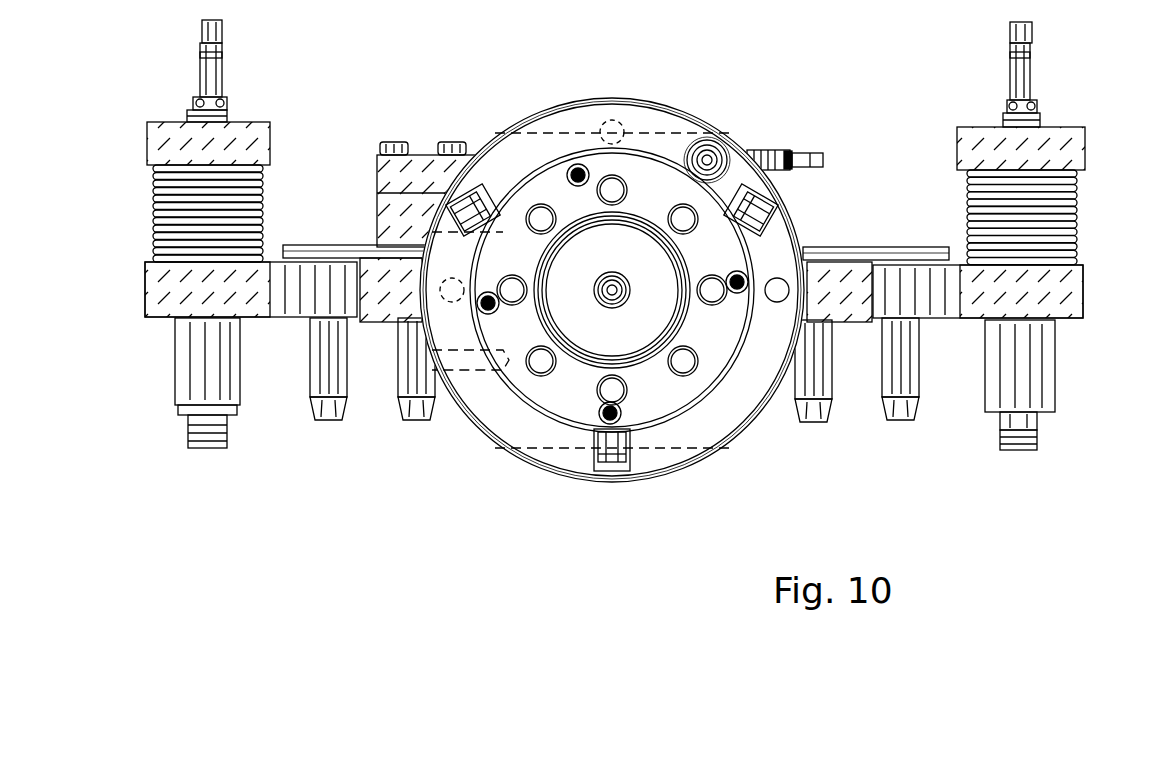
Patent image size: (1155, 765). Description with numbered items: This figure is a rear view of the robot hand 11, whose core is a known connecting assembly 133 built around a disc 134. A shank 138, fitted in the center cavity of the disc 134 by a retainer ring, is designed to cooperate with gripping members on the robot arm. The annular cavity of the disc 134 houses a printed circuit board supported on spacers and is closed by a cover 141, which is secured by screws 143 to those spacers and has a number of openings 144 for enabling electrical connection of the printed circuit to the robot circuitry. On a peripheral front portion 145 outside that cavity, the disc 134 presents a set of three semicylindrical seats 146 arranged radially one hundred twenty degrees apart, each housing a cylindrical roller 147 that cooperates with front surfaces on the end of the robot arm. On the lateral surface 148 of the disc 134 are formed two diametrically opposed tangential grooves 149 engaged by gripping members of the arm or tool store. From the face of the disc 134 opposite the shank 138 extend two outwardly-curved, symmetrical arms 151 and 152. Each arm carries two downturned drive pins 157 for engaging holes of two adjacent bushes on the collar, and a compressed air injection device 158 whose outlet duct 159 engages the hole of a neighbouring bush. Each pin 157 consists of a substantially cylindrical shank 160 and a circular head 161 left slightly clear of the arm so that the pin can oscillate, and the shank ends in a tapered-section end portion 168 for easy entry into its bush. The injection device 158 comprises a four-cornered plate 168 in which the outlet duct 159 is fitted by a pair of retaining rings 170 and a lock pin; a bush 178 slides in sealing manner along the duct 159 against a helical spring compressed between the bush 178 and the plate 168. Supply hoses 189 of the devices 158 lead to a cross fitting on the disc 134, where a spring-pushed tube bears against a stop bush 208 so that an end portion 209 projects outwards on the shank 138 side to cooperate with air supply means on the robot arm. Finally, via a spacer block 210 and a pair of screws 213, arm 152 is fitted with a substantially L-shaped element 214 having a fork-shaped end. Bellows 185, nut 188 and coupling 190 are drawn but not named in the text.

The hand 11 is at (330, 492).
The connecting assembly 133 is at (470, 438).
The disc 134 is at (732, 438).
The shank 138 is at (612, 296).
The cover 141 is at (545, 345).
The screws 143 is at (578, 170).
The openings 144 is at (684, 226).
The peripheral front portion 145 is at (675, 442).
The semicylindrical seats 146 is at (457, 205).
The cylindrical rollers 147 is at (483, 220).
The lateral surface 148 is at (706, 116).
The tangential grooves 149 is at (638, 138).
The arm 151 is at (906, 250).
The arm 152 is at (320, 246).
The drive pins 157 is at (328, 426).
The compressed air injection device 158 is at (1086, 206).
The outlet duct 159 is at (188, 417).
The shank 160 is at (933, 353).
The head 161 is at (286, 246).
The tapered-section end portion 168 is at (160, 142).
The retaining rings 170 is at (226, 118).
The bush 178 is at (195, 349).
The bellows 185 is at (165, 199).
The nut 188 is at (200, 99).
The supply hoses 189 is at (224, 33).
The coupling 190 is at (228, 434).
The stop bush 208 is at (714, 148).
The end portion 209 is at (712, 160).
The spacer block 210 is at (395, 224).
The screws 213 is at (450, 141).
The L-shaped element 214 is at (376, 166).